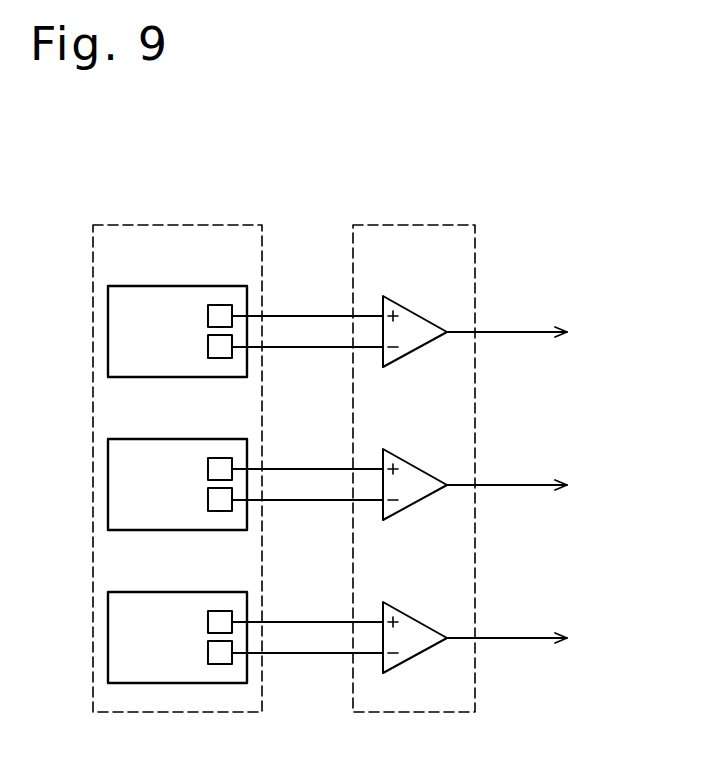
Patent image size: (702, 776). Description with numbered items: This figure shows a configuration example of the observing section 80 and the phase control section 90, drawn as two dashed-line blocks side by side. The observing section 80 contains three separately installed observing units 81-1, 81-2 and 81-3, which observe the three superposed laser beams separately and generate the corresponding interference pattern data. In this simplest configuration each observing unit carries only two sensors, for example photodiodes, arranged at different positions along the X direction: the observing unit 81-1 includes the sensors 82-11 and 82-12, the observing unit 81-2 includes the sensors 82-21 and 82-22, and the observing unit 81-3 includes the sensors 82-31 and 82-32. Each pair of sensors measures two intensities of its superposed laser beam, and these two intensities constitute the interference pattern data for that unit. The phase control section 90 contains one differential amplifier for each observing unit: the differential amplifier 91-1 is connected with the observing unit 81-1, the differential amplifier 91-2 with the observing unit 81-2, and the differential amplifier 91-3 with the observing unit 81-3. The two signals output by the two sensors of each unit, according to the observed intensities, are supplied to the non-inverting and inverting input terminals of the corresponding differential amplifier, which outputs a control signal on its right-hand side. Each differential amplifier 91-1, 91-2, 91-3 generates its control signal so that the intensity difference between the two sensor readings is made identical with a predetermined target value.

The observing section 80 is at (201, 224).
The phase control section 90 is at (414, 224).
The observing unit 81-1 is at (169, 285).
The sensor 82-11 is at (208, 317).
The sensor 82-12 is at (208, 347).
The differential amplifier 91-1 is at (417, 309).
The observing unit 81-2 is at (169, 438).
The sensor 82-21 is at (208, 470).
The sensor 82-22 is at (208, 500).
The differential amplifier 91-2 is at (417, 462).
The observing unit 81-3 is at (169, 591).
The sensor 82-31 is at (208, 623).
The sensor 82-32 is at (208, 653).
The differential amplifier 91-3 is at (417, 615).